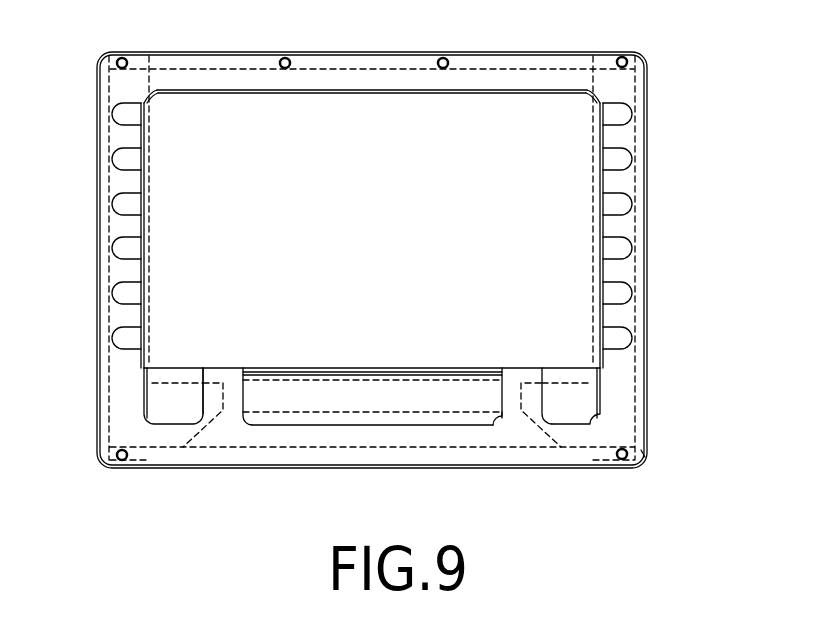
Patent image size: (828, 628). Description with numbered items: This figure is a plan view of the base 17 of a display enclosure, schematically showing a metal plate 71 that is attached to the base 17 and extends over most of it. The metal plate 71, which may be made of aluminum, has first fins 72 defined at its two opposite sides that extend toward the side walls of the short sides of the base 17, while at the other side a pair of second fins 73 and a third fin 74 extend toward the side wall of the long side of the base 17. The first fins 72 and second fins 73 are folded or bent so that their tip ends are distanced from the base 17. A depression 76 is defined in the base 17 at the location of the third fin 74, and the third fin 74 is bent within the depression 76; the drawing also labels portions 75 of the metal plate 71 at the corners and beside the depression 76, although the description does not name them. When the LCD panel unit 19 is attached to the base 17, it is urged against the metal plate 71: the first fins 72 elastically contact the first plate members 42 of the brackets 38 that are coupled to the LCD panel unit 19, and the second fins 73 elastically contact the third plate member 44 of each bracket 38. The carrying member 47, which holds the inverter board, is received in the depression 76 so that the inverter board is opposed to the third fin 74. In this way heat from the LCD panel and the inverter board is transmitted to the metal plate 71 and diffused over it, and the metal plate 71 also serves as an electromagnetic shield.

The base 17 is at (649, 82).
The LCD panel unit 19 is at (320, 68).
The bracket 38 is at (646, 456).
The first plate member 42 is at (110, 406).
The third plate member 44 is at (208, 432).
The carrying member 47 is at (508, 415).
The metal plate 71 is at (495, 92).
The first fins 72 is at (143, 125).
The second fins 73 is at (144, 420).
The third fin 74 is at (390, 425).
The ribs 75 is at (147, 99).
The depression 76 is at (233, 425).